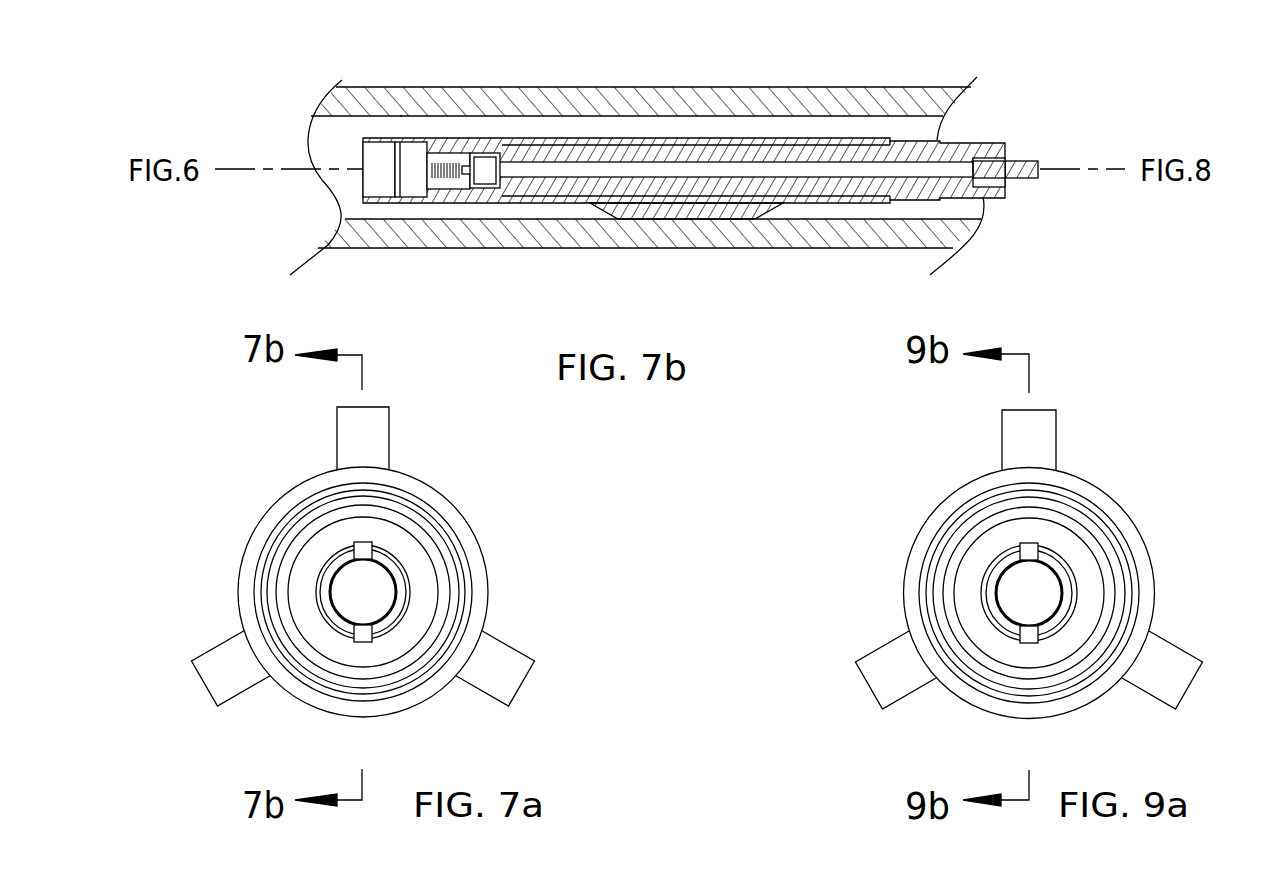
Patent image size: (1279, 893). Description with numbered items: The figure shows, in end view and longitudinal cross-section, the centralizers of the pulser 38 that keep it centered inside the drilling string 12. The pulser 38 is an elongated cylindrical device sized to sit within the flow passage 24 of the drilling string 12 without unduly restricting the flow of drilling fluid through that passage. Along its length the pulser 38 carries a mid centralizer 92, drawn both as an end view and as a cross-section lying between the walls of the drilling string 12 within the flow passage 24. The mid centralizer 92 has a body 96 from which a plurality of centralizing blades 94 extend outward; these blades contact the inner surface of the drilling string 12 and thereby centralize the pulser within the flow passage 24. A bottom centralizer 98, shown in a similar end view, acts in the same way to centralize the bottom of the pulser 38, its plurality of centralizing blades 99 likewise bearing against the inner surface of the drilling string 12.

In FIG. 7B, the drilling string 12 is at (505, 97).
In FIG. 7B, the flow passage 24 is at (395, 125).
In FIG. 7B, the pulser 38 is at (675, 142).
In FIG. 7B, the mid centralizer 92 is at (543, 185).
In FIG. 7A, the mid centralizer 92 is at (468, 522).
In FIG. 7B, the centralizing blades 94 is at (690, 212).
In FIG. 7A, the centralizing blades 94 is at (378, 440).
In FIG. 7B, the body 96 is at (855, 195).
In FIG. 7A, the body 96 is at (262, 533).
In FIG. 9A, the bottom centralizer 98 is at (1136, 524).
In FIG. 9A, the centralizing blades 99 is at (1047, 441).